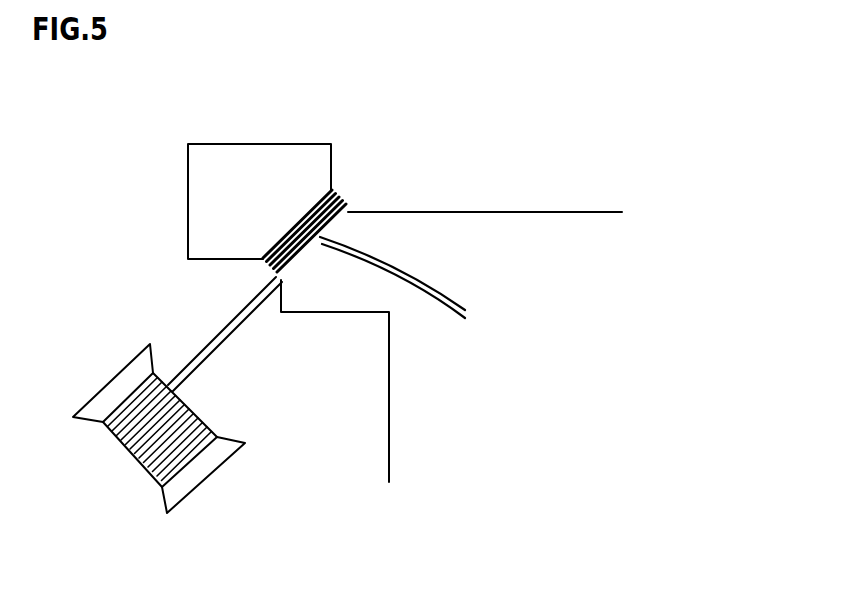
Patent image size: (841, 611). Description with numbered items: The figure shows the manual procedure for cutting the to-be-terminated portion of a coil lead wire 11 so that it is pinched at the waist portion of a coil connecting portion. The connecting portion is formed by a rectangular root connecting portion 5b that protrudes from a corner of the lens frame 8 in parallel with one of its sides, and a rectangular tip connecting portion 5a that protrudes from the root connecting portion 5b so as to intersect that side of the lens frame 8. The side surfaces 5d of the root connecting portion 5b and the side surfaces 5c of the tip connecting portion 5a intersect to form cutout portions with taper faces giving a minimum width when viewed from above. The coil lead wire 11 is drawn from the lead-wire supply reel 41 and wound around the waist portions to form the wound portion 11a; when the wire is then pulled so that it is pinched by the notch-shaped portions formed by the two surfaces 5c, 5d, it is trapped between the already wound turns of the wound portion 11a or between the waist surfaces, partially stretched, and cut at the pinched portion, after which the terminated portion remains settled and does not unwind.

The tip connecting portion 5a is at (232, 180).
The root connecting portion 5b is at (332, 282).
The side surfaces of tip connecting portion 5c is at (333, 167).
The side surfaces of root connecting portion 5d is at (407, 212).
The coil lead wire 11 is at (443, 298).
The wound portion of coil lead wire 11a is at (295, 223).
The lens frame 8 is at (530, 255).
The lead-wire supply reel 41 is at (88, 371).